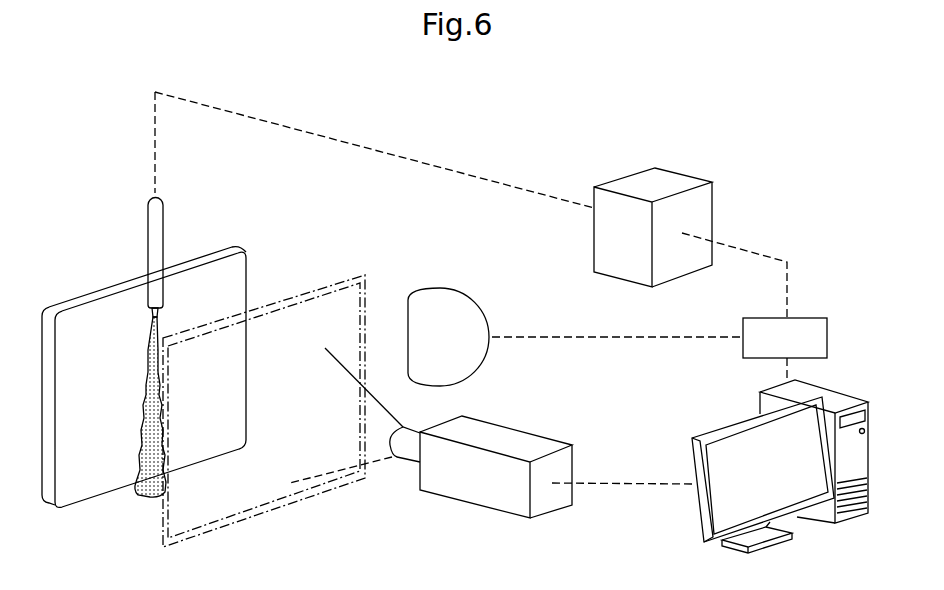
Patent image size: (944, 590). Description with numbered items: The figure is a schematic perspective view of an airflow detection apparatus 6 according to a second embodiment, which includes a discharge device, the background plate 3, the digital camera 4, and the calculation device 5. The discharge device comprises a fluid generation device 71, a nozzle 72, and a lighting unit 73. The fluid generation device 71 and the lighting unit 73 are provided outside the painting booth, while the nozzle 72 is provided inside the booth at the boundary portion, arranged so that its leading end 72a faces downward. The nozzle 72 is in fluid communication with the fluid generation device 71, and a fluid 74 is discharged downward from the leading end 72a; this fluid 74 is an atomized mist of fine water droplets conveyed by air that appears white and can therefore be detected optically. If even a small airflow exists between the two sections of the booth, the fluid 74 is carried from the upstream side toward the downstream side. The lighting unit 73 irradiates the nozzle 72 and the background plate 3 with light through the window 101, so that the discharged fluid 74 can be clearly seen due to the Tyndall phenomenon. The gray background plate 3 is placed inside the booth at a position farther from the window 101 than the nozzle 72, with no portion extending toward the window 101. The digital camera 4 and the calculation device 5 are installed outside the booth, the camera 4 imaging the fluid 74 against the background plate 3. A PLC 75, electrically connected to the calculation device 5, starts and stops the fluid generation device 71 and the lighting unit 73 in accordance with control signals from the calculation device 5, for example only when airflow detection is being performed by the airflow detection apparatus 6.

The background plate 3 is at (75, 300).
The digital camera 4 is at (495, 434).
The calculation device 5 is at (855, 401).
The airflow detection apparatus 6 is at (778, 123).
The fluid generation device 71 is at (640, 182).
The nozzle 72 is at (147, 233).
The leading end 72a is at (152, 310).
The lighting unit 73 is at (497, 282).
The fluid 74 is at (142, 448).
The PLC 75 is at (818, 318).
The window 101 is at (313, 292).